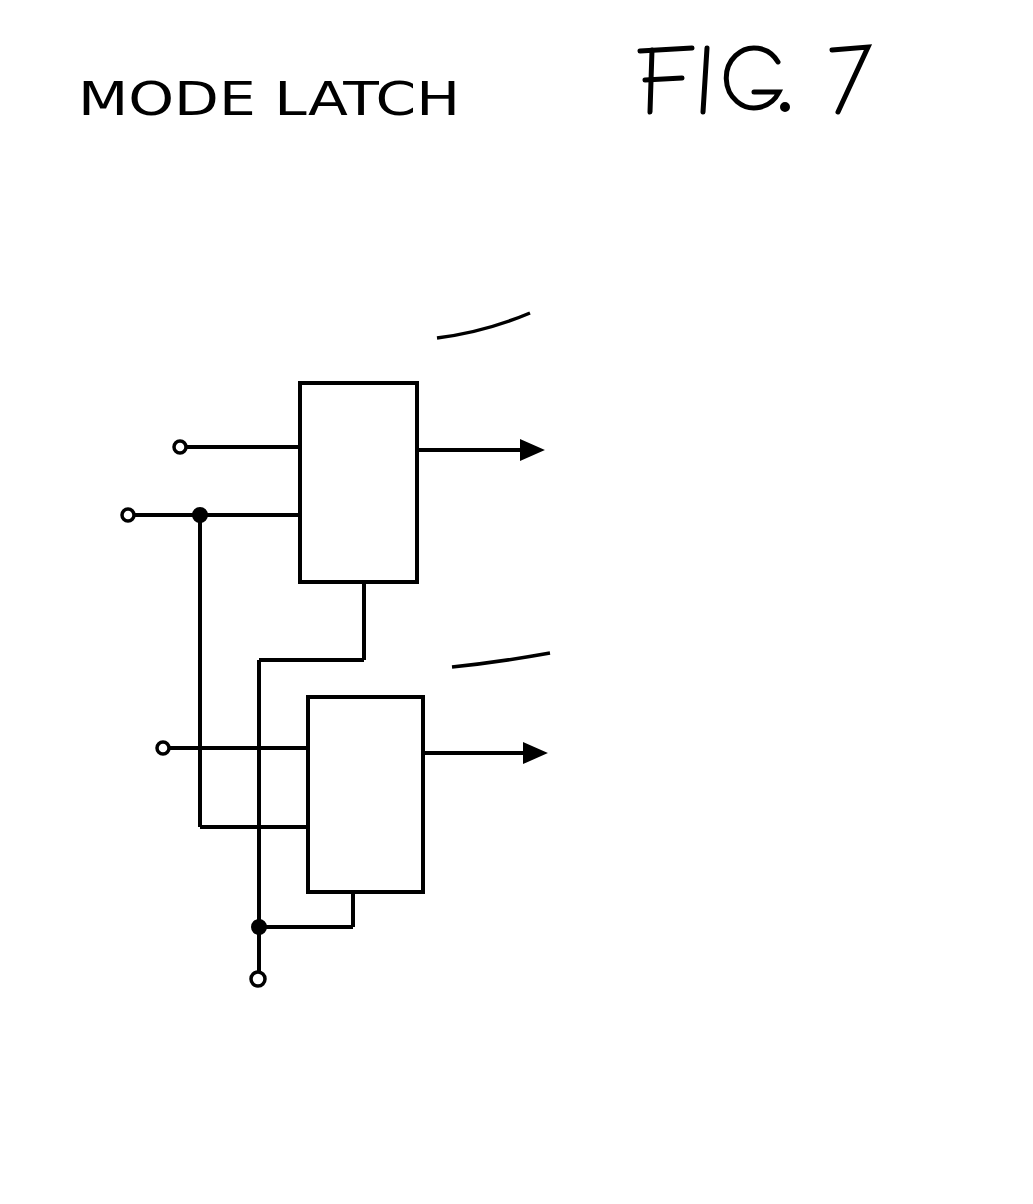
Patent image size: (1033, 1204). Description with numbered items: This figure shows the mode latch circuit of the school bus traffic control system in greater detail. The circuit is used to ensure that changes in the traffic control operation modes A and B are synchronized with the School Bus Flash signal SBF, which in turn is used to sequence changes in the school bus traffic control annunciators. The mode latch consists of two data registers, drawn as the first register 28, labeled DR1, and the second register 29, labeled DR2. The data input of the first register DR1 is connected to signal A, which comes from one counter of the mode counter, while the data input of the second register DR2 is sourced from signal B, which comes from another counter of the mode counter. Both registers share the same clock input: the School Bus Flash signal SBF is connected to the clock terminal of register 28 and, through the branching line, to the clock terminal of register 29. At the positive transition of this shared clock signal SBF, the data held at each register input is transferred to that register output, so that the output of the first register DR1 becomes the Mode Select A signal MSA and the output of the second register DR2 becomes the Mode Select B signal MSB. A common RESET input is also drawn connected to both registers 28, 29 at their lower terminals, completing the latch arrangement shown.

The first D-type latch (DR1) 28 is at (327, 383).
The second D-type latch (DR2) 29 is at (371, 697).
The data register MLDR1 DR1 is at (561, 308).
The data register MLDR2 DR2 is at (588, 635).
The signal A is at (212, 443).
The signal B is at (206, 745).
The School Bus Flash clock signal SBF is at (166, 659).
The reset input RESET is at (288, 808).
The Mode Select A signal MSA is at (549, 448).
The Mode Select B signal MSB is at (554, 758).